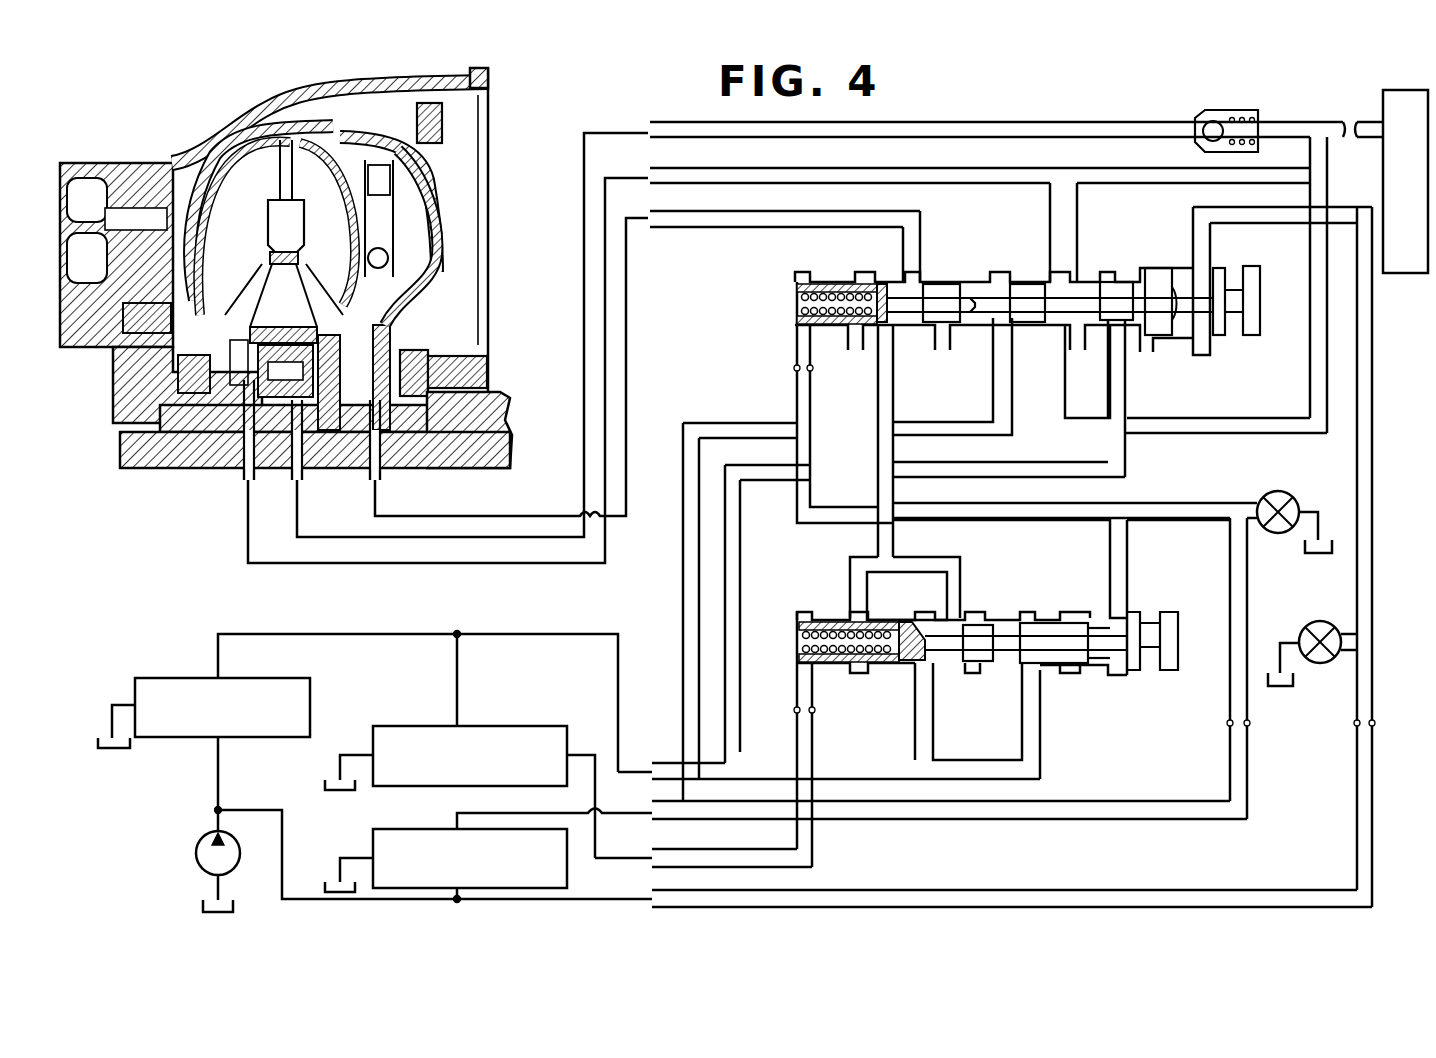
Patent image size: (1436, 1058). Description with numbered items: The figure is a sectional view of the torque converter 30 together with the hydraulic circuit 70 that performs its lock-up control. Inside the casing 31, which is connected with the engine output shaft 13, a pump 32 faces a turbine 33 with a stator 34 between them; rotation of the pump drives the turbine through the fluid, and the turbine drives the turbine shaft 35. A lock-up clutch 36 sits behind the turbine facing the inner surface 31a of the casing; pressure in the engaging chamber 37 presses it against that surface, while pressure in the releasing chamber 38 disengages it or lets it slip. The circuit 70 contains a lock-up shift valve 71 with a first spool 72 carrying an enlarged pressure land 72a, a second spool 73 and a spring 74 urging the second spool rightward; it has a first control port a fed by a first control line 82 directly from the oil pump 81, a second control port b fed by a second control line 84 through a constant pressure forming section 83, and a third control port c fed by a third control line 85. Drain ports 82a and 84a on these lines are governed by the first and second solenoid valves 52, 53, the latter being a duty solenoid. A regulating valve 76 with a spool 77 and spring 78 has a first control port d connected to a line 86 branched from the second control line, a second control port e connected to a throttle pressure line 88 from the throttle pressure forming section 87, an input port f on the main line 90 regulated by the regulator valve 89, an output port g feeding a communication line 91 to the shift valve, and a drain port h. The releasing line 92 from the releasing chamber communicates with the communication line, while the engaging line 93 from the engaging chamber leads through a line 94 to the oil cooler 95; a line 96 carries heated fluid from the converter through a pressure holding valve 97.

The engine output shaft 13 is at (498, 408).
The torque converter 30 is at (245, 130).
The casing 31 is at (324, 115).
The inner surface 31a is at (438, 230).
The pump 32 is at (238, 195).
The turbine 33 is at (290, 100).
The stator 34 is at (272, 290).
The turbine shaft 35 is at (122, 452).
The lock-up clutch 36 is at (445, 125).
The engaging chamber 37 is at (352, 150).
The releasing chamber 38 is at (432, 300).
The first solenoid valve 52 is at (1325, 622).
The second solenoid valve 53 is at (1270, 490).
The hydraulic circuit 70 is at (975, 108).
The lock-up shift valve 71 is at (1033, 272).
The first spool 72 is at (1075, 335).
The enlarged pressure land 72a is at (1163, 340).
The second spool 73 is at (888, 360).
The spring 74 is at (795, 304).
The regulating valve 76 is at (1040, 605).
The spool 77 is at (1000, 630).
The spring 78 is at (790, 642).
The oil pump 81 is at (197, 858).
The first control line 82 is at (1357, 880).
The drain port 82a is at (1340, 660).
The constant pressure forming section 83 is at (385, 830).
The second control line 84 is at (1186, 512).
The drain port 84a is at (1250, 520).
The third control line 85 is at (932, 432).
The line 86 is at (1122, 580).
The throttle pressure forming section 87 is at (487, 727).
The throttle pressure line 88 is at (804, 736).
The regulator valve 89 is at (173, 678).
The main line 90 is at (1108, 452).
The communication line 91 is at (885, 540).
The releasing line 92 is at (915, 236).
The engaging line 93 is at (978, 180).
The line 94 is at (1250, 420).
The oil cooler 95 is at (1383, 95).
The line 96 is at (1103, 122).
The pressure holding valve 97 is at (1245, 92).
The first control port a is at (1185, 265).
The second control port b is at (797, 355).
The third control port c is at (985, 322).
The first control port d is at (1120, 678).
The second control port e is at (797, 692).
The input port f is at (915, 700).
The output port g is at (945, 595).
The drain port h is at (970, 678).